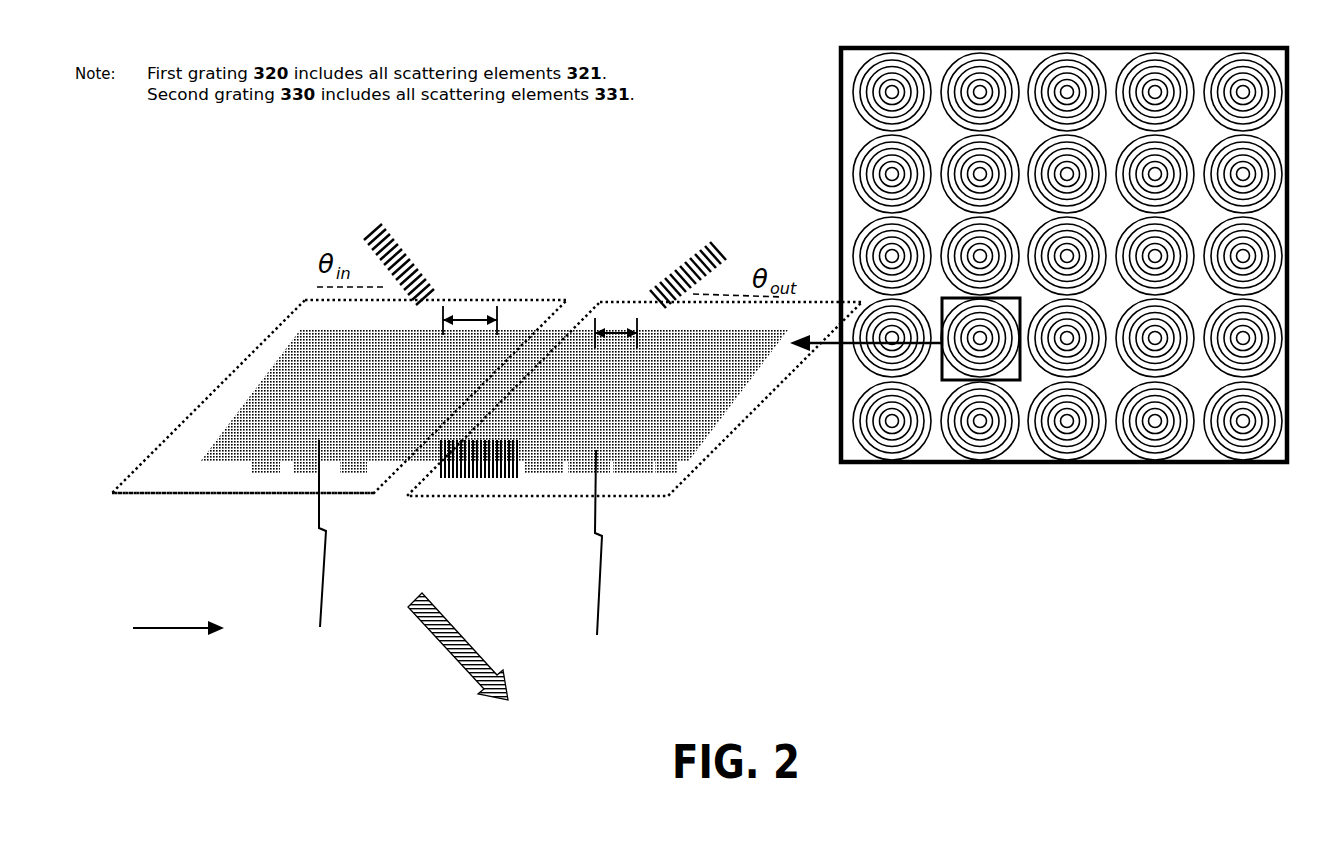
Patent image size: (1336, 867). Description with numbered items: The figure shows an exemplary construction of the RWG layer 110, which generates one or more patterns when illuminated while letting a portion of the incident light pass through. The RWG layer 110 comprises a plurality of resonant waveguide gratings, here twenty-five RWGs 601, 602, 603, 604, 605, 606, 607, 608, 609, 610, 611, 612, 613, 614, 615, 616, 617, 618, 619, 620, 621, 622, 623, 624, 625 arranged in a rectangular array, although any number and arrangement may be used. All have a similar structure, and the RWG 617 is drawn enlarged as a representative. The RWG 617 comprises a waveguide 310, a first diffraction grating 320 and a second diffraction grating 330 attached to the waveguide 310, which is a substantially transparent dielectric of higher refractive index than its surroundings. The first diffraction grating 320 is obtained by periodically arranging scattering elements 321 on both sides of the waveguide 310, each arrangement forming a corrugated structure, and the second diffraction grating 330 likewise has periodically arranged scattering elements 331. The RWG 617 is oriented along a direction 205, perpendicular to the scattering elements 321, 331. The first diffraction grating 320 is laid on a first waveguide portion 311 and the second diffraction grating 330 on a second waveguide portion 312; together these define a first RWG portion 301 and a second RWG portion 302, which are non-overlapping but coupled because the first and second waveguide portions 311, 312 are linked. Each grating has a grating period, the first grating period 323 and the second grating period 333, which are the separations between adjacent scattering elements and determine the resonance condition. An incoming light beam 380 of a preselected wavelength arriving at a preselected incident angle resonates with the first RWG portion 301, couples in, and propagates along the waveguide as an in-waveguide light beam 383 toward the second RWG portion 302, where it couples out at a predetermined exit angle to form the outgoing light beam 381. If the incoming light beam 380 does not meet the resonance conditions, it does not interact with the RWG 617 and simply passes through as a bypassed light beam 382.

The RWG layer 110 is at (1243, 553).
The direction 205 is at (187, 630).
The first RWG portion 301 is at (152, 495).
The second RWG portion 302 is at (443, 497).
The waveguide 310 is at (196, 444).
The first waveguide portion 311 is at (319, 551).
The second waveguide portion 312 is at (595, 557).
The first diffraction grating 320 is at (368, 396).
The scattering elements 321 is at (248, 415).
The first grating period 323 is at (467, 315).
The second diffraction grating 330 is at (596, 396).
The scattering elements 331 is at (527, 414).
The second grating period 333 is at (620, 310).
The incoming light beam 380 is at (400, 253).
The outgoing light beam 381 is at (683, 270).
The bypassed light beam 382 is at (440, 640).
The in-waveguide light beam 383 is at (478, 480).
The RWG 601 is at (928, 98).
The RWG 602 is at (1016, 98).
The RWG 603 is at (1103, 98).
The RWG 604 is at (1191, 98).
The RWG 605 is at (1279, 98).
The RWG 606 is at (928, 180).
The RWG 607 is at (1016, 180).
The RWG 608 is at (1103, 180).
The RWG 609 is at (1191, 180).
The RWG 610 is at (1279, 180).
The RWG 611 is at (928, 262).
The RWG 612 is at (1016, 262).
The RWG 613 is at (1103, 262).
The RWG 614 is at (1191, 262).
The RWG 615 is at (1279, 262).
The RWG 616 is at (930, 358).
The RWG 617 is at (684, 600).
The RWG 618 is at (1105, 358).
The RWG 619 is at (1193, 358).
The RWG 620 is at (1280, 350).
The RWG 621 is at (927, 440).
The RWG 622 is at (1015, 440).
The RWG 623 is at (1102, 440).
The RWG 624 is at (1190, 440).
The RWG 625 is at (1280, 425).